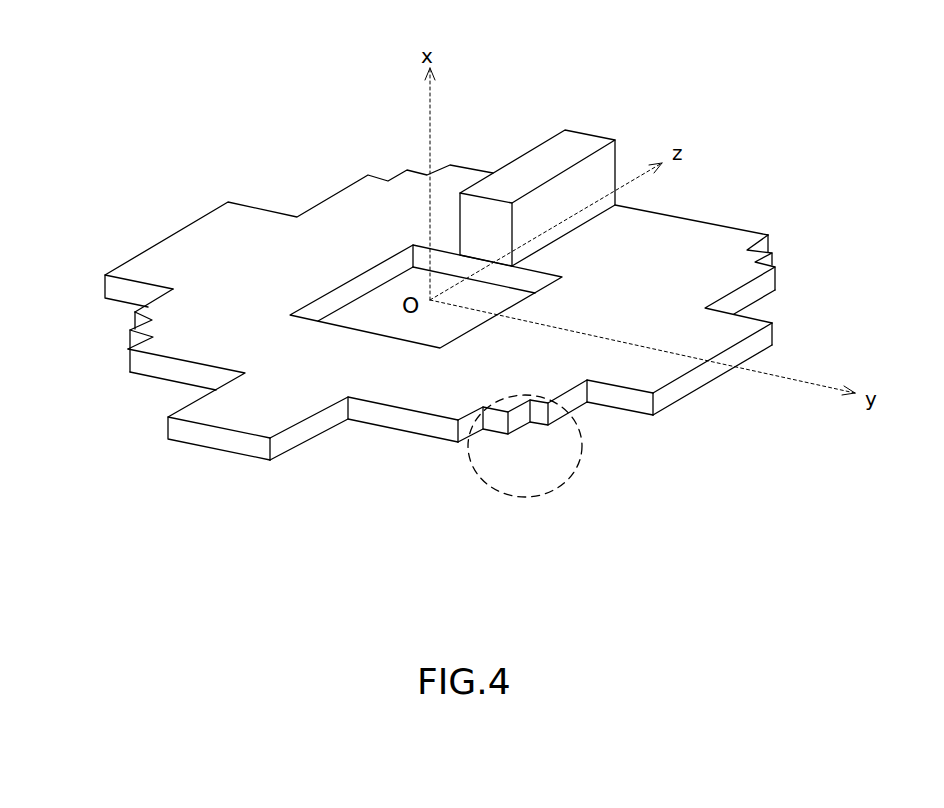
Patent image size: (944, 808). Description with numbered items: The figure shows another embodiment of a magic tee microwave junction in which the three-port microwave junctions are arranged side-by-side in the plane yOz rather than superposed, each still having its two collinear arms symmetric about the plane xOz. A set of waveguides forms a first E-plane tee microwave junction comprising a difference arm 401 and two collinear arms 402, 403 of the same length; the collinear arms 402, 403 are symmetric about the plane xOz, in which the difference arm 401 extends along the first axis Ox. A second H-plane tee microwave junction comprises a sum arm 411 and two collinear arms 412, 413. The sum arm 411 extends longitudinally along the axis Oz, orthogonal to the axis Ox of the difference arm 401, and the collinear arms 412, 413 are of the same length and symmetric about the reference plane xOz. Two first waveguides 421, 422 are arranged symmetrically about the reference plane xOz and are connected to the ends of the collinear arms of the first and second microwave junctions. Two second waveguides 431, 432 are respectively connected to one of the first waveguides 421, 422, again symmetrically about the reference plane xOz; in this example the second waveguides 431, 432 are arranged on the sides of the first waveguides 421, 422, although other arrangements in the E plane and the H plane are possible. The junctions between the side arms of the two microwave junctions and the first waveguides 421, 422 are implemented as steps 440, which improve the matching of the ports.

The difference arm 401 is at (580, 143).
The collinear arm 402 is at (452, 180).
The collinear arm 403 is at (657, 202).
The sum arm 411 is at (200, 409).
The collinear arm 412 is at (195, 343).
The collinear arm 413 is at (395, 420).
The first waveguide 421 is at (272, 265).
The first waveguide 422 is at (650, 283).
The second waveguide 431 is at (210, 240).
The second waveguide 432 is at (653, 380).
The steps 440 is at (553, 492).